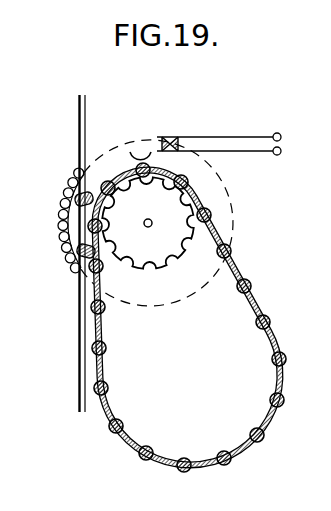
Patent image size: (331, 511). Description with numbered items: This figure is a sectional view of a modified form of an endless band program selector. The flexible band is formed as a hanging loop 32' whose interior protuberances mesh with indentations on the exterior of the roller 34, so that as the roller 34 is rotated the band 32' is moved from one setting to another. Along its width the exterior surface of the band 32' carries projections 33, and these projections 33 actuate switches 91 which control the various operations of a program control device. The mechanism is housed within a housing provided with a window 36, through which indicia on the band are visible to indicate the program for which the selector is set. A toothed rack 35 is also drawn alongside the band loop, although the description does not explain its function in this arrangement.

The tensioning bar assembly 91 is at (205, 151).
The sprocket wheel 34 is at (173, 208).
The toothed rack 35 is at (64, 196).
The guide block 36 is at (72, 238).
The chain 32' is at (187, 317).
The chain roller 33 is at (116, 421).